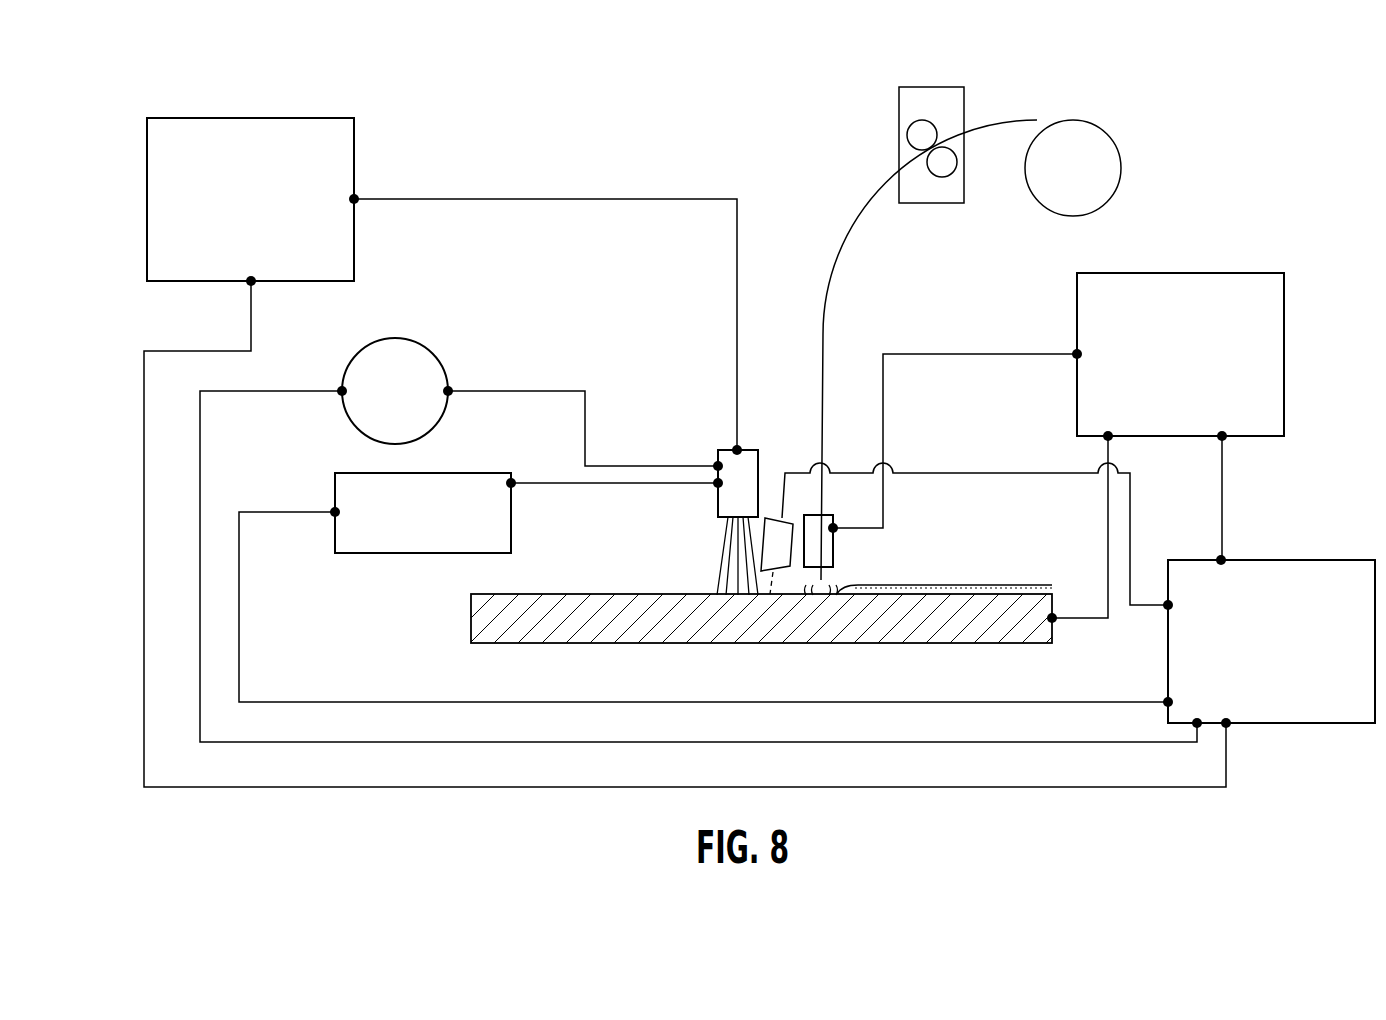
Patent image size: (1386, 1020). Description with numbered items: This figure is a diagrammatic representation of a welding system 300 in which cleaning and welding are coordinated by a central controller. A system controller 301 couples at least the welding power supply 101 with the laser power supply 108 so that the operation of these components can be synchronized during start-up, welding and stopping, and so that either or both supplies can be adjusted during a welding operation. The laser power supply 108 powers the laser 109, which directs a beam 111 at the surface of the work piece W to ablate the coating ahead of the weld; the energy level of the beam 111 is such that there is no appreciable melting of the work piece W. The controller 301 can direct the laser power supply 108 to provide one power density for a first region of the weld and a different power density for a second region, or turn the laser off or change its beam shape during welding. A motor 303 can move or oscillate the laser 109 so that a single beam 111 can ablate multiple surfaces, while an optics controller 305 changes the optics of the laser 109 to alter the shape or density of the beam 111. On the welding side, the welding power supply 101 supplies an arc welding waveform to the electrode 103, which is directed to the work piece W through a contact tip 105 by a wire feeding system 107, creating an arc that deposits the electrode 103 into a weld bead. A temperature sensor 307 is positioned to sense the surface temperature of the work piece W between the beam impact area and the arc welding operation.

The system 300 is at (1155, 72).
The laser power supply 108 is at (354, 155).
The motor 303 is at (415, 338).
The optics controller 305 is at (410, 553).
The laser 109 is at (718, 452).
The beam 111 is at (722, 548).
The temperature sensor 307 is at (784, 562).
The contact tip 105 is at (833, 540).
The electrode 103 is at (833, 258).
The wire feeding system 107 is at (913, 124).
The welding power supply 101 is at (1220, 273).
The system controller 301 is at (1262, 560).
The work piece W is at (572, 645).